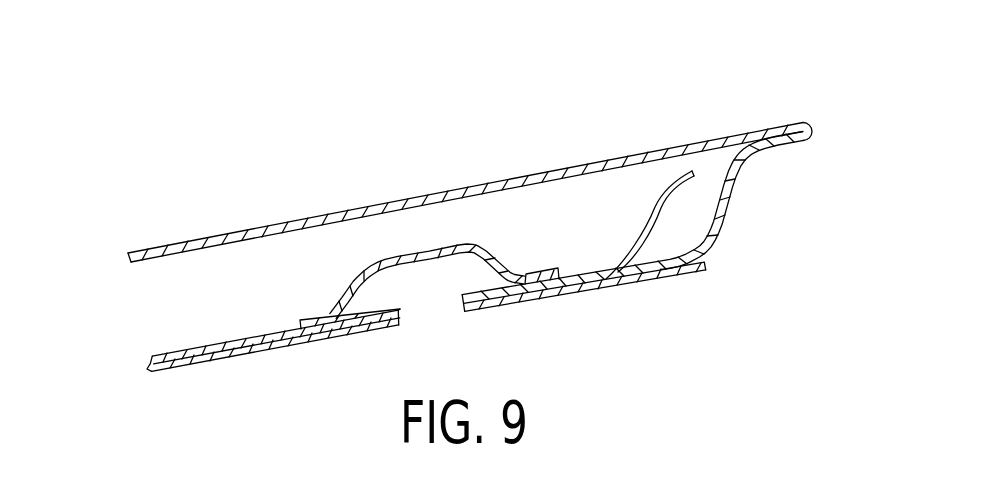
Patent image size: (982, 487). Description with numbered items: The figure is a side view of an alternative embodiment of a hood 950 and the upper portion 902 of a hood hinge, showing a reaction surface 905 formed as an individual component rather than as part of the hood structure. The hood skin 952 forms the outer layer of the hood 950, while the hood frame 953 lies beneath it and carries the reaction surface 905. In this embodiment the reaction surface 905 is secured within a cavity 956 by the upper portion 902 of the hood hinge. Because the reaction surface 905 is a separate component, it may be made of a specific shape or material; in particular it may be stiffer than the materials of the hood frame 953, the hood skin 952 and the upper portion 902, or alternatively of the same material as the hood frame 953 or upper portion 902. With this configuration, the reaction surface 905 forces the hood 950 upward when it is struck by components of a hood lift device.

The hood 950 is at (502, 161).
The hood skin 952 is at (318, 217).
The hood frame 953 is at (749, 205).
The reaction surface 905 is at (418, 258).
The upper portion of a hood hinge 902 is at (633, 233).
The cavity 956 is at (170, 300).